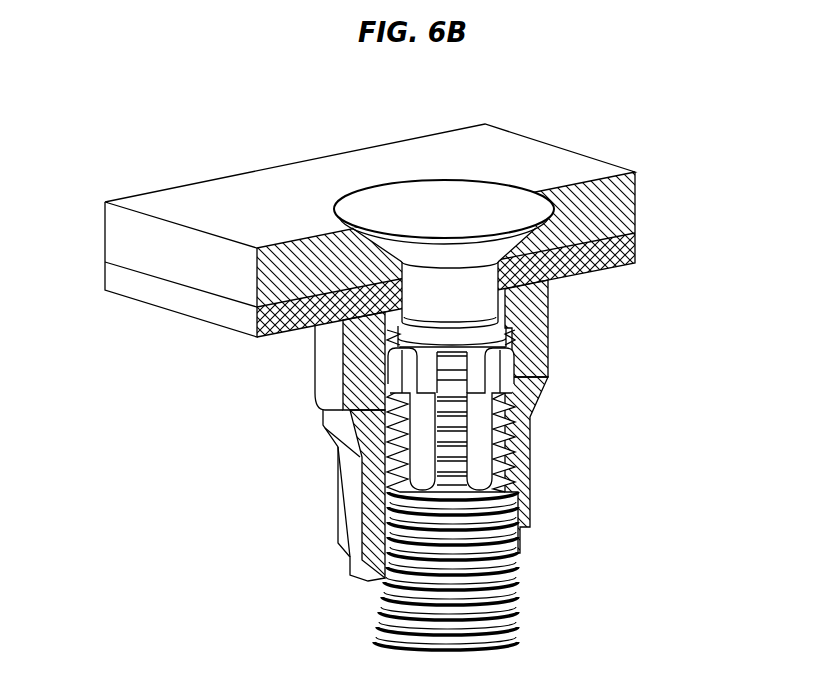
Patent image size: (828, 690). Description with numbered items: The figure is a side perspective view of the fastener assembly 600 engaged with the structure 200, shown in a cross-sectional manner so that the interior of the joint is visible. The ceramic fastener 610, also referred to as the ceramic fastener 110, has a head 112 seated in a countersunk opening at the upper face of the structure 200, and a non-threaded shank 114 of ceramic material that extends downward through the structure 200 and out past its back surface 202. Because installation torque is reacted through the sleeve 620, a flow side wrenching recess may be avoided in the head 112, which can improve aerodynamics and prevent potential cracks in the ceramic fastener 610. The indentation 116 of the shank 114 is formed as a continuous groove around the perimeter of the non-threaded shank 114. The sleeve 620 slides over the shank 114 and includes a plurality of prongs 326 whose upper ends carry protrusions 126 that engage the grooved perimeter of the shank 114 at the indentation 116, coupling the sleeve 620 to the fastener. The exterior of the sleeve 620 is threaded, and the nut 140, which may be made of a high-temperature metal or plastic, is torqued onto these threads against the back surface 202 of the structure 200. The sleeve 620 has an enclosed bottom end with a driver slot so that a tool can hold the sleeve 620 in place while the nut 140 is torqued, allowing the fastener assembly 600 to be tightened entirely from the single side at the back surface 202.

The structure 200 is at (383, 230).
The back surface 202 is at (210, 338).
The ceramic fastener 610 is at (434, 223).
The head 112 is at (478, 203).
The non-threaded shank 114 is at (485, 298).
The indentation 116 is at (480, 340).
The protrusions 126 is at (410, 368).
The prongs 326 is at (453, 485).
The ceramic fastener 110 is at (450, 504).
The sleeve 620 is at (360, 625).
The nut 140 is at (320, 500).
The fastener assembly 600 is at (362, 401).